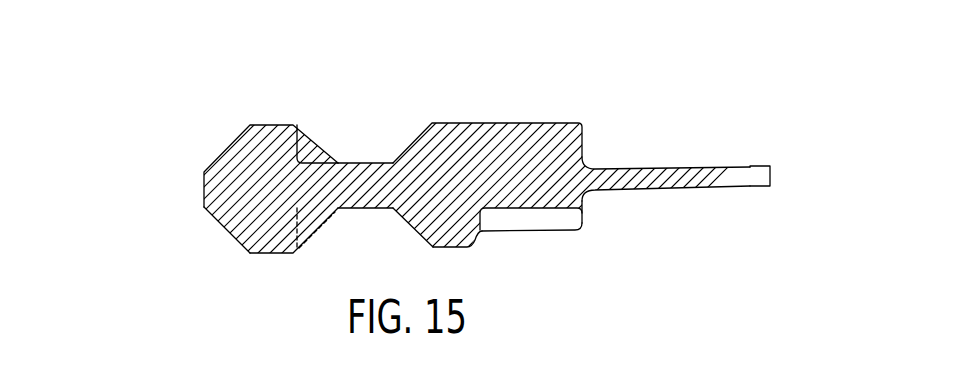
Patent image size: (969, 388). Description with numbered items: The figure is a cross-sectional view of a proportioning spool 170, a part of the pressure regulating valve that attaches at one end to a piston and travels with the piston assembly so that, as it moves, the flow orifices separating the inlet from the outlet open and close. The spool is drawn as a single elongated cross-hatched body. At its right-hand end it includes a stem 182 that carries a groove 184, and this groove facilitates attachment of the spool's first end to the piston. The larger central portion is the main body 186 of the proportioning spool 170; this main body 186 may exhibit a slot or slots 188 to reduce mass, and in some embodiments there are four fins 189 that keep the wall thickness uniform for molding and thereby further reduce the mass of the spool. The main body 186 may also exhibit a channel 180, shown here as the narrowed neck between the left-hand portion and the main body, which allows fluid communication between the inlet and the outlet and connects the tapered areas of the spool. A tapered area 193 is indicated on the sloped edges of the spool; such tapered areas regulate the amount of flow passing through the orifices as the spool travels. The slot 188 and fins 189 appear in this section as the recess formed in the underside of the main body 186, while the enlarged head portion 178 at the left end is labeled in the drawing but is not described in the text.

The proportioning spool 170 is at (163, 73).
The head portion 178 is at (242, 152).
The channel 180 is at (365, 163).
The stem 182 is at (715, 168).
The groove 184 is at (753, 186).
The main body 186 is at (523, 135).
The slot 188 is at (552, 222).
The fins 189 is at (582, 222).
The tapered area 193 is at (252, 252).